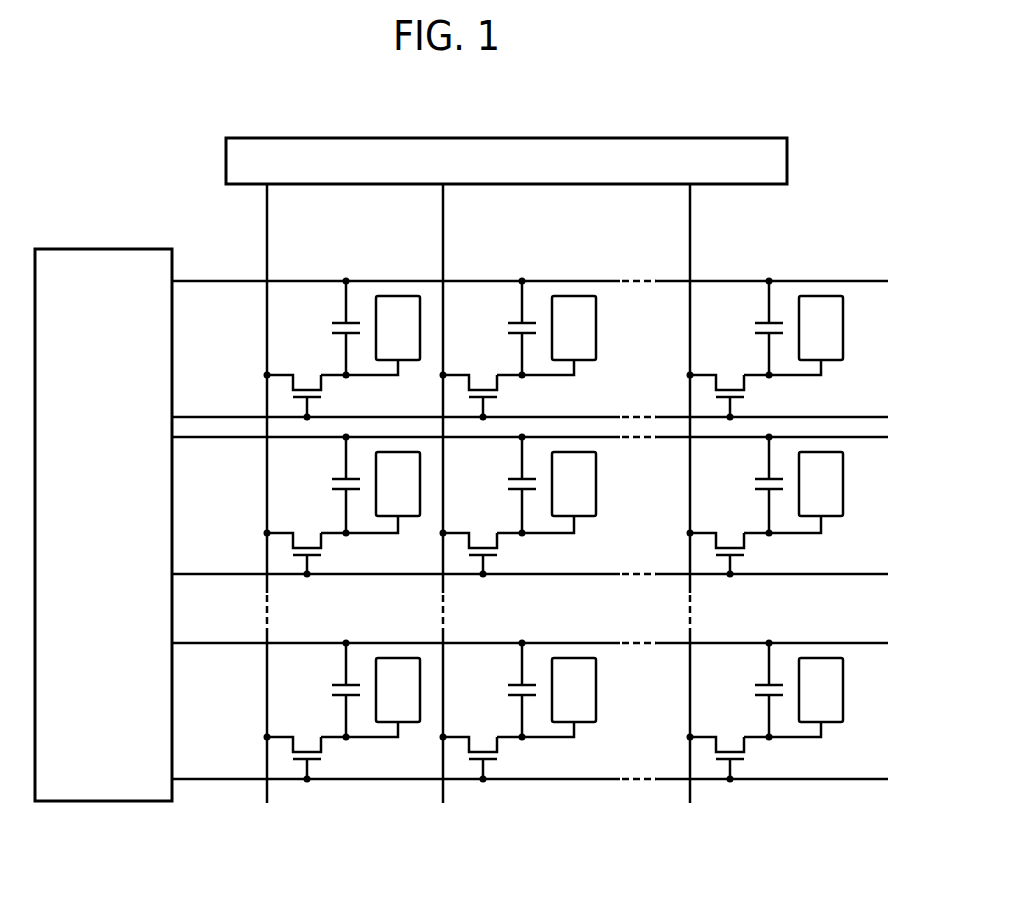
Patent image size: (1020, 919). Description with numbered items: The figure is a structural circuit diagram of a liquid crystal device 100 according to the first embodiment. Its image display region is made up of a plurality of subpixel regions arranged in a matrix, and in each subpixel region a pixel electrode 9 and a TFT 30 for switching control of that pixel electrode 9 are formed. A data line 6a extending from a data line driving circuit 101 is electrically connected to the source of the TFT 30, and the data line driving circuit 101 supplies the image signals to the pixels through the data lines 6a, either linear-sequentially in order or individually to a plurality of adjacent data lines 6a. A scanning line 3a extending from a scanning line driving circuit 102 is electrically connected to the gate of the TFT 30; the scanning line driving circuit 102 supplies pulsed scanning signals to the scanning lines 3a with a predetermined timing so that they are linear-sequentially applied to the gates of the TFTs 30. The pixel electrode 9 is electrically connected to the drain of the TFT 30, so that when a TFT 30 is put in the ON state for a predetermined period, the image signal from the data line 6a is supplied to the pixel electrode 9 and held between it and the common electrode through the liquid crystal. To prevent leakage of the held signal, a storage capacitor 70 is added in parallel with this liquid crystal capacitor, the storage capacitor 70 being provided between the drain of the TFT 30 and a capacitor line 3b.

The liquid crystal device 100 is at (847, 240).
The data line driving circuit 101 is at (226, 165).
The scanning line driving circuit 102 is at (108, 250).
The scanning line 3a is at (255, 417).
The capacitor line 3b is at (256, 282).
The data line 6a is at (268, 273).
The pixel electrode 9 is at (393, 305).
The storage capacitor 70 is at (334, 328).
The TFT 30 is at (329, 395).